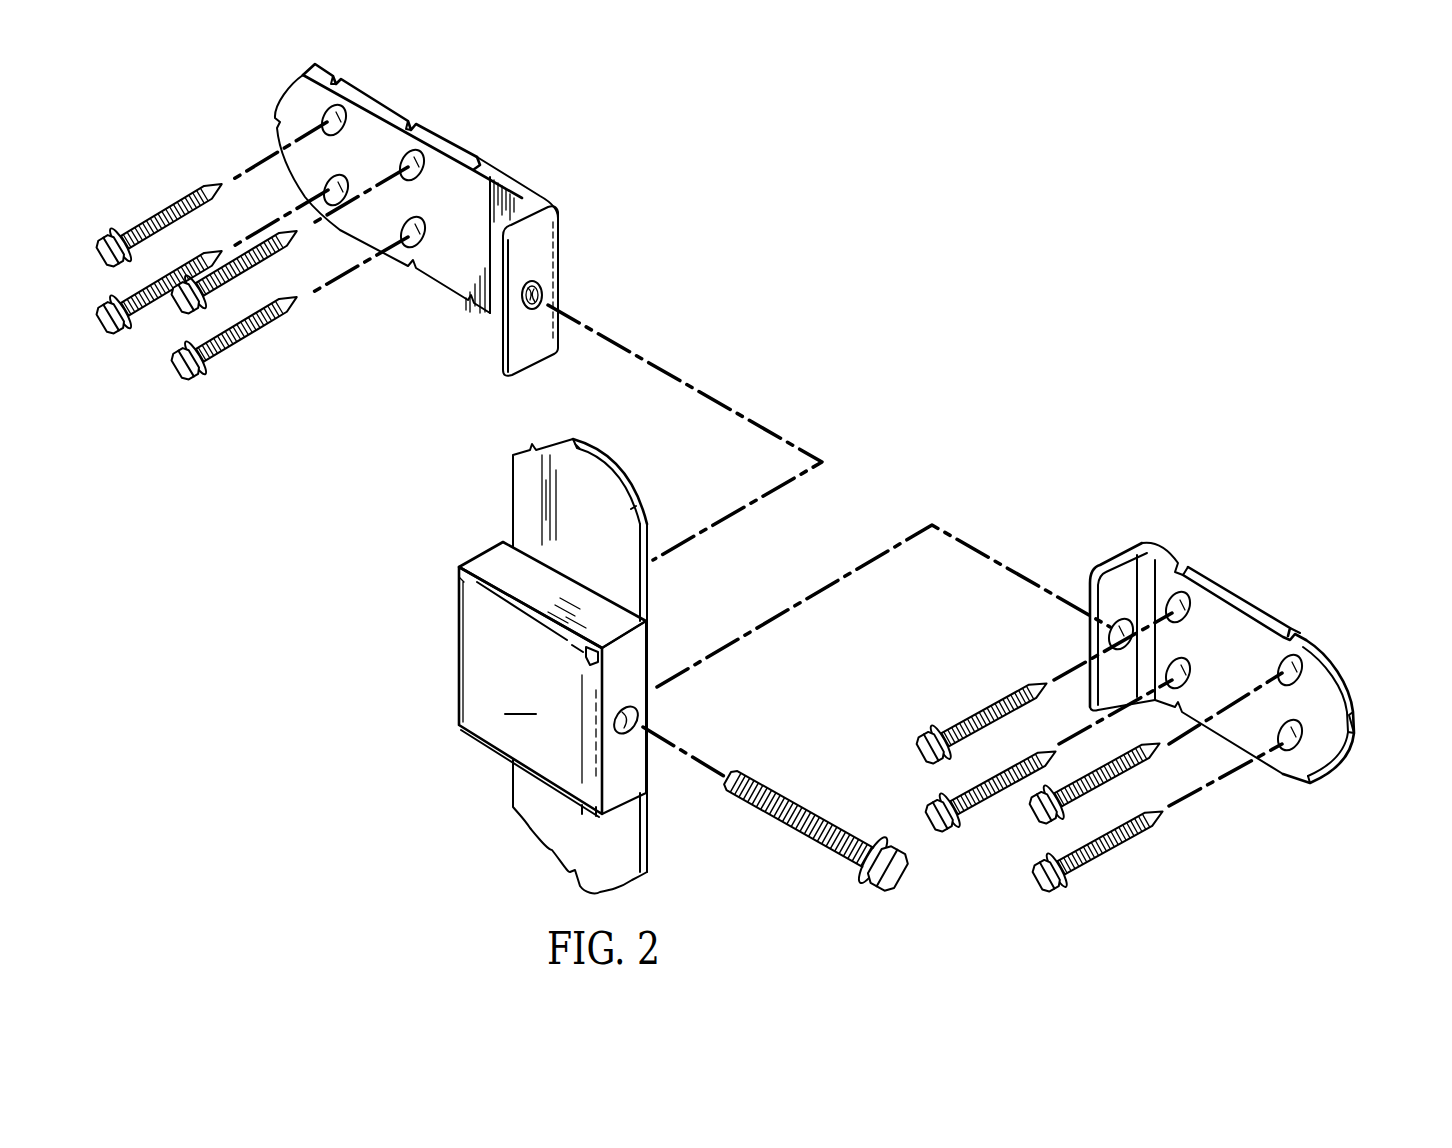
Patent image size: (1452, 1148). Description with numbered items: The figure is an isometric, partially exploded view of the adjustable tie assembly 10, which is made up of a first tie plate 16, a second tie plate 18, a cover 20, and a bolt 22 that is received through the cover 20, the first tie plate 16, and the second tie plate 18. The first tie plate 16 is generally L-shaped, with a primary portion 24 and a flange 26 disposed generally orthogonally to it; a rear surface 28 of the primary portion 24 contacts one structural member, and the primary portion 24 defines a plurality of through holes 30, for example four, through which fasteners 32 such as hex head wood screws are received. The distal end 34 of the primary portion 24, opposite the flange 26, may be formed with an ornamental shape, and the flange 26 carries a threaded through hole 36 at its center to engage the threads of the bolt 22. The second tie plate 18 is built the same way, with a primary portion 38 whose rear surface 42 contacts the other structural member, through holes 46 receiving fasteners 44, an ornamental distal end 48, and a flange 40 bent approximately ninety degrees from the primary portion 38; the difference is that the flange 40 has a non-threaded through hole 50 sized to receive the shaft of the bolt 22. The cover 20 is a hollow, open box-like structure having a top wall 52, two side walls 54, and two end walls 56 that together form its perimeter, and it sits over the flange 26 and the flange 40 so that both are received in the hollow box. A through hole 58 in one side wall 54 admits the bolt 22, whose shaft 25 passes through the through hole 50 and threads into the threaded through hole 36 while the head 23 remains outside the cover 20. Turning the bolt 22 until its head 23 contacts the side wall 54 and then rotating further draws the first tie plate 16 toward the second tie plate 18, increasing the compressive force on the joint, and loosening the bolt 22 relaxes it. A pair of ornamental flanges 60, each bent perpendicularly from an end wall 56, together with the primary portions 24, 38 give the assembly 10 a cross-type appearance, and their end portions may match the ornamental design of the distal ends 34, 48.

The adjustable tie assembly 10 is at (935, 222).
The first tie plate 16 is at (525, 137).
The second tie plate 18 is at (1312, 624).
The cover 20 is at (459, 727).
The bolt 22 is at (812, 848).
The head 23 is at (893, 880).
The primary portion 24 is at (450, 268).
The shaft 25 is at (817, 817).
The flange 26 is at (536, 356).
The rear surface 28 is at (455, 140).
The through holes 30 is at (418, 226).
The fasteners 32 is at (152, 218).
The distal end 34 is at (232, 110).
The threaded through hole 36 is at (545, 296).
The primary portion 38 is at (1283, 763).
The flange 40 is at (1112, 553).
The rear surface 42 is at (1229, 585).
The fasteners 44 is at (1108, 850).
The through holes 46 is at (1331, 673).
The distal end 48 is at (1366, 730).
The through hole 50 is at (1112, 620).
The top wall 52 is at (530, 692).
The side walls 54 is at (635, 652).
The end walls 56 is at (557, 582).
The through hole 58 is at (640, 718).
The ornamental flanges 60 is at (522, 495).